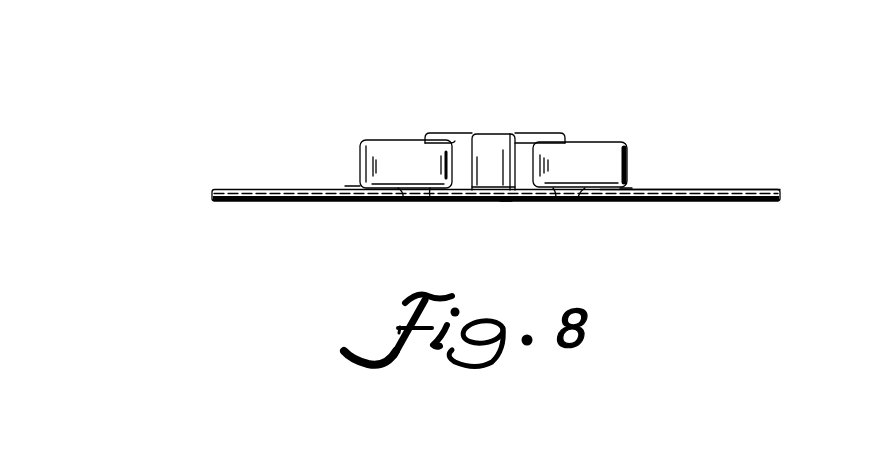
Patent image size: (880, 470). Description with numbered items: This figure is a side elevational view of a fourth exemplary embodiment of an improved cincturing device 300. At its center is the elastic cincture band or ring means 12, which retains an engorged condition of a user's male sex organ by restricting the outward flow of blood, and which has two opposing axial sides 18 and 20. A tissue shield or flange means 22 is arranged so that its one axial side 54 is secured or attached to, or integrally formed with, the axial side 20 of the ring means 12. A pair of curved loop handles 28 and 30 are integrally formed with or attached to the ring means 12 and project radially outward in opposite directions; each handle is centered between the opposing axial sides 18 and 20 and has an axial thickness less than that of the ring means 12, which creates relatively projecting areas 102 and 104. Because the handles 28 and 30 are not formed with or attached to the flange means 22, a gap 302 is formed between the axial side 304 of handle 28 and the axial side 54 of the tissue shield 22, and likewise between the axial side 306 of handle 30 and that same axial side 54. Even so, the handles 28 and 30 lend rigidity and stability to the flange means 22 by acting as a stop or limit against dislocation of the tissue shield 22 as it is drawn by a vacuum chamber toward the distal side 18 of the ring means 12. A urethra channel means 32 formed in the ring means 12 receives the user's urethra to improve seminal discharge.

The improved cincturing device 300 is at (535, 113).
The curved loop handle 30 is at (362, 148).
The axial side 18 is at (461, 132).
The elastic cincture band 12 is at (520, 131).
The projecting area 102 is at (567, 131).
The curved loop handle 28 is at (630, 152).
The tissue shield 22 is at (236, 189).
The axial side of tissue shield 54 is at (732, 189).
The gap 302 is at (357, 186).
The axial side of handle 30 306 is at (403, 190).
The axial side 20 is at (430, 190).
The urethra channel means 32 is at (506, 201).
The projecting area 104 is at (556, 190).
The axial side of handle 28 304 is at (578, 190).